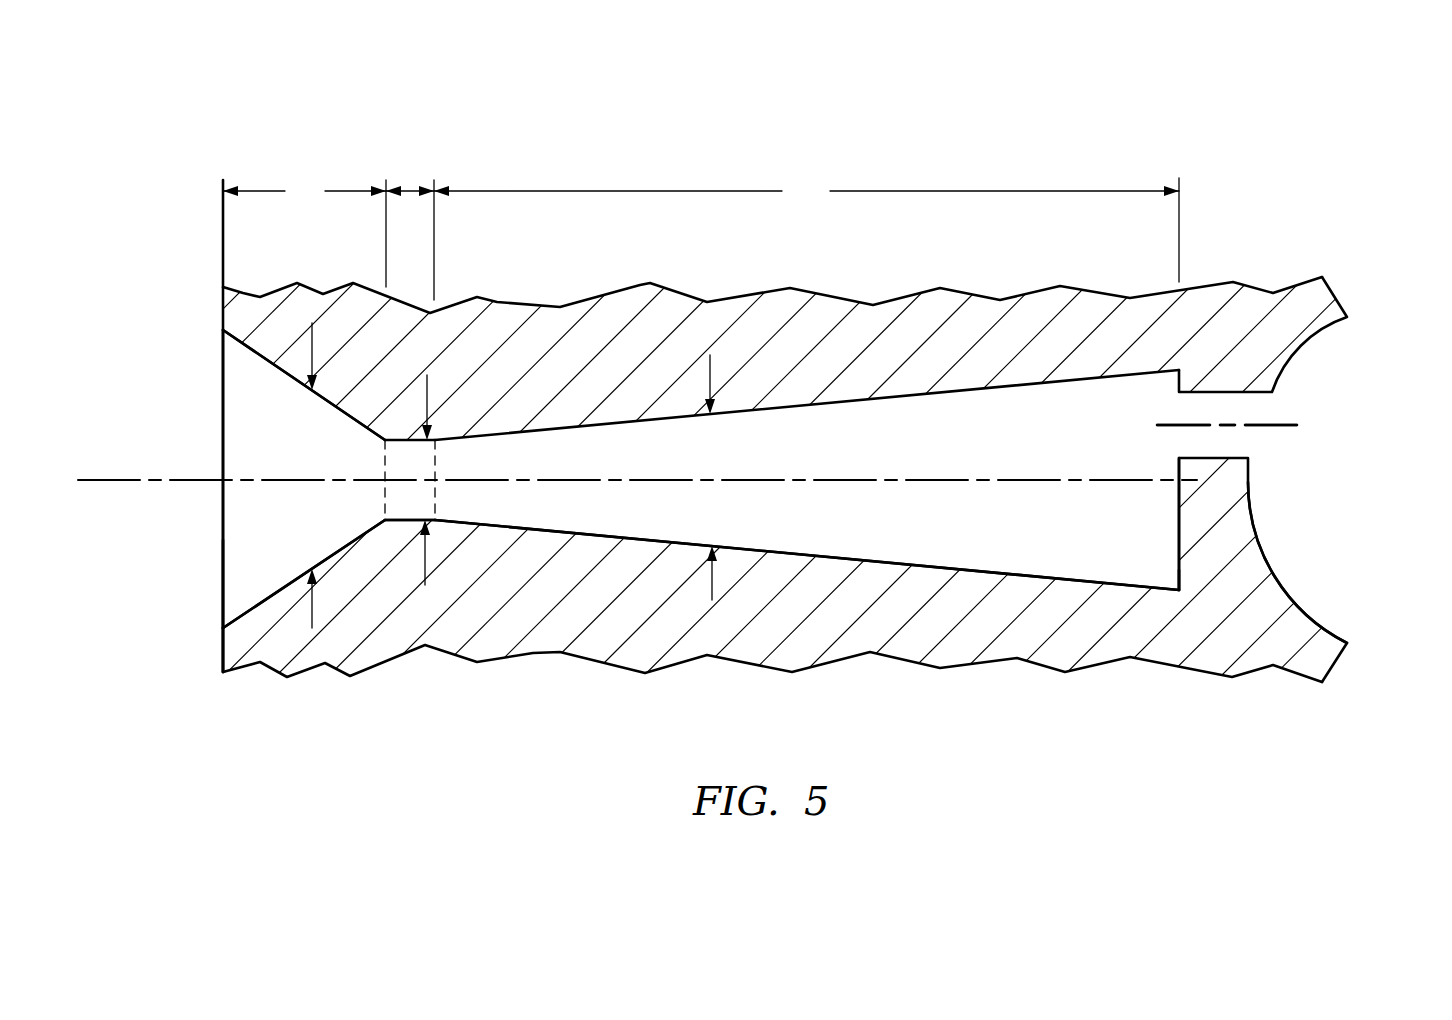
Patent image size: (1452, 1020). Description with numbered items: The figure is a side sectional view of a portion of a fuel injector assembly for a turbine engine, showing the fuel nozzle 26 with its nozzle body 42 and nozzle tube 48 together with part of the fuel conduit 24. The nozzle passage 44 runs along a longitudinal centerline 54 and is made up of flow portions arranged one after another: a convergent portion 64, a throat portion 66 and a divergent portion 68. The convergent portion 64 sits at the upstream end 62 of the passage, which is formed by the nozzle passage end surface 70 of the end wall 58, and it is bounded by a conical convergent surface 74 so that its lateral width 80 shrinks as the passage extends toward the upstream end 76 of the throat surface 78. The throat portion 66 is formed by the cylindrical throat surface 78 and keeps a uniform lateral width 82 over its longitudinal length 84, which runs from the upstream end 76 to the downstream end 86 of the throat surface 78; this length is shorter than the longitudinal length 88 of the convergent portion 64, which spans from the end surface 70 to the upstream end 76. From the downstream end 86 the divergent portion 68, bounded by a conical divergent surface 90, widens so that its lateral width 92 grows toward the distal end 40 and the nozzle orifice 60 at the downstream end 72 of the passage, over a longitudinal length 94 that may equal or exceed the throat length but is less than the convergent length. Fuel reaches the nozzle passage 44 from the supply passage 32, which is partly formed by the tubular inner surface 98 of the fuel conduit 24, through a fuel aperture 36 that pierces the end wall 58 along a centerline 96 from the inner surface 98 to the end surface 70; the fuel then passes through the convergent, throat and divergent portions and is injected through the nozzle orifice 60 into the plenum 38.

The fuel conduit 24 is at (1320, 277).
The fuel nozzle 26 is at (726, 457).
The nozzle body 42 is at (790, 268).
The supply passage 32 is at (1334, 548).
The fuel aperture 36 is at (1231, 443).
The plenum 38 is at (112, 389).
The distal end 40 is at (222, 652).
The nozzle passage 44 is at (243, 434).
The nozzle tube 48 is at (603, 666).
The longitudinal centerline 54 is at (97, 487).
The end wall 58 is at (1178, 530).
The nozzle orifice 60 is at (222, 552).
The upstream end 62 is at (1155, 642).
The nozzle passage end surface 70 is at (1178, 569).
The convergent portion 64 is at (907, 457).
The throat portion 66 is at (408, 458).
The divergent portion 68 is at (327, 457).
The downstream end 72 is at (222, 612).
The convergent surface 74 is at (860, 556).
The upstream end 76 is at (435, 522).
The throat surface 78 is at (404, 519).
The lateral width 80 is at (710, 586).
The lateral width 82 is at (428, 405).
The longitudinal length 84 is at (402, 186).
The downstream end 86 is at (392, 525).
The longitudinal length 88 is at (806, 229).
The divergent surface 90 is at (280, 596).
The lateral width 92 is at (310, 348).
The longitudinal length 94 is at (304, 232).
The centerline 96 is at (1270, 425).
The inner surface 98 is at (1252, 494).